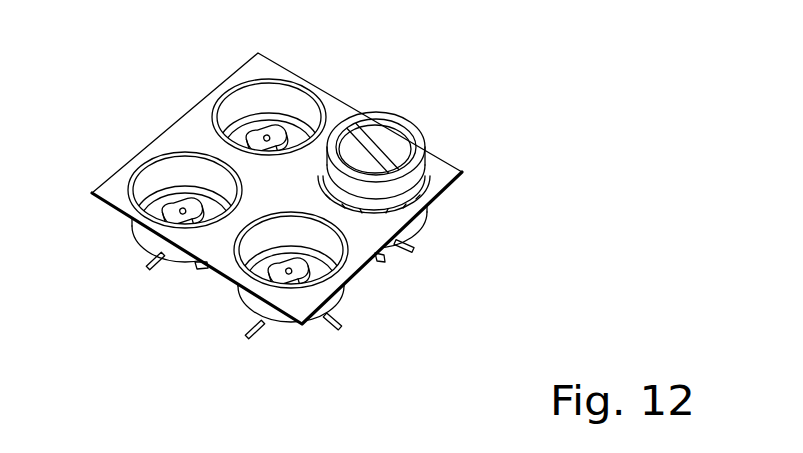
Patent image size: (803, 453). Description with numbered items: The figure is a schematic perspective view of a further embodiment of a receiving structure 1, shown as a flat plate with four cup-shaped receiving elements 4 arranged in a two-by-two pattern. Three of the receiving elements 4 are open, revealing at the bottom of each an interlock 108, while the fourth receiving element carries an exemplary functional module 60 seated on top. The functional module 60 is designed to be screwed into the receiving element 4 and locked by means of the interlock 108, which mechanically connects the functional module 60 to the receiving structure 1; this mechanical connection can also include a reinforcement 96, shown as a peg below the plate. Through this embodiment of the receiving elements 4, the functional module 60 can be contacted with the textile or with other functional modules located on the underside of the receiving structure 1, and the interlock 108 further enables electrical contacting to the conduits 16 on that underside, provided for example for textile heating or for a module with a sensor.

The receiving structure 1 is at (463, 130).
The receiving element 4 is at (145, 240).
The conduit 16 is at (342, 327).
The functional module 60 is at (408, 150).
The reinforcement 96 is at (415, 249).
The interlock 108 is at (262, 137).